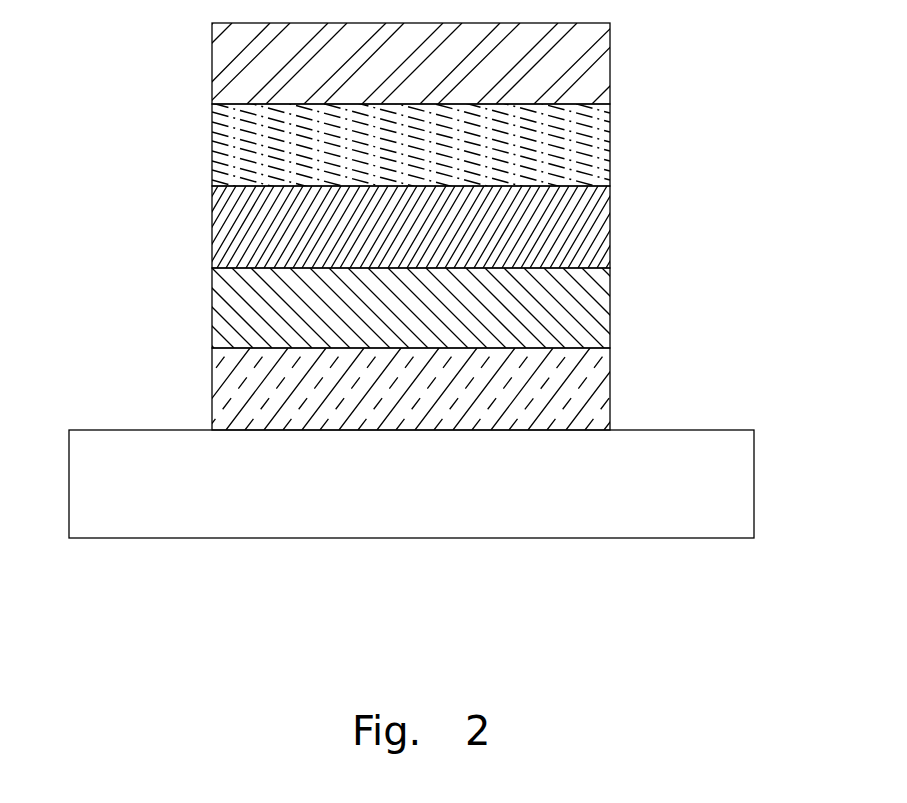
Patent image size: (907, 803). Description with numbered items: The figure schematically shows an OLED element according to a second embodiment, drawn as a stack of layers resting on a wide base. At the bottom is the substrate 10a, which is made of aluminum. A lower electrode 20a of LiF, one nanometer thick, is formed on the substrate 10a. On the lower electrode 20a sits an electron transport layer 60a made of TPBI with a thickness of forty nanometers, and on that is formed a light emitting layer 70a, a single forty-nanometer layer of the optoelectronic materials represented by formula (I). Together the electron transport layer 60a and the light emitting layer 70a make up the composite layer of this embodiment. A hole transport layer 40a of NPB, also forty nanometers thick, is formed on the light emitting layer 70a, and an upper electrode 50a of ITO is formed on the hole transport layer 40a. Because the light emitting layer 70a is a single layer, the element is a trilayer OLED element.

The substrate 10a is at (745, 460).
The lower electrode 20a is at (592, 397).
The electron transport layer 60a is at (592, 317).
The light emitting layer 70a is at (592, 232).
The hole transport layer 40a is at (592, 153).
The upper electrode 50a is at (592, 72).